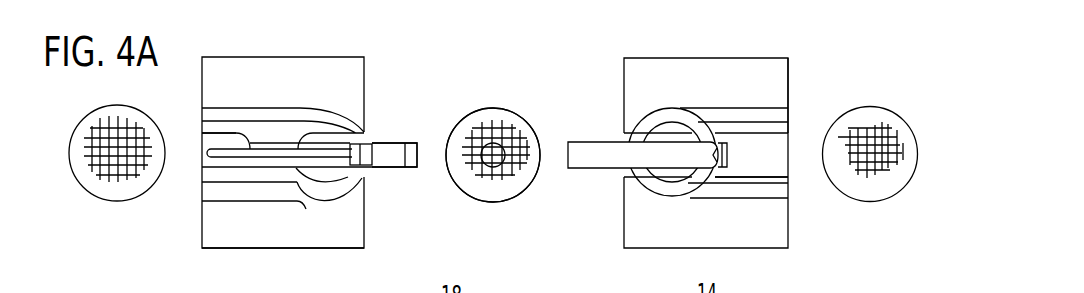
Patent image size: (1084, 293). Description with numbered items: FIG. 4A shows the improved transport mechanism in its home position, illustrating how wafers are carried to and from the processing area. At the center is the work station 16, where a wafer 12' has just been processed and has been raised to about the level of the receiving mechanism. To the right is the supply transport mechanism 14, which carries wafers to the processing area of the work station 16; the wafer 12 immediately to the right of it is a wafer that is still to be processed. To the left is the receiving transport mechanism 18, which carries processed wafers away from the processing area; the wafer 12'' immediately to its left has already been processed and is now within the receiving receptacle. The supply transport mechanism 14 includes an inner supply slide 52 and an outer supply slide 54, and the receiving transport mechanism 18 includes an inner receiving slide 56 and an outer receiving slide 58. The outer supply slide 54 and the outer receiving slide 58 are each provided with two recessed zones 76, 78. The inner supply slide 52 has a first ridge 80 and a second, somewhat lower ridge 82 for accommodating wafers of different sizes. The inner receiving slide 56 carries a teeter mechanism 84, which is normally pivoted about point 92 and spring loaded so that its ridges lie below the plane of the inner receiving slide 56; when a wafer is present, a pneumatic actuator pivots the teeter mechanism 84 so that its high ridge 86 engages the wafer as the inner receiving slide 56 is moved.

The wafer 12 is at (880, 146).
The wafer in processing area 12' is at (506, 145).
The processed wafer 12'' is at (124, 142).
The supply transport mechanism 14 is at (714, 47).
The work station 16 is at (506, 58).
The receiving transport mechanism 18 is at (304, 36).
The inner supply slide 52 is at (777, 160).
The outer supply slide 54 is at (789, 88).
The inner receiving slide 56 is at (385, 168).
The outer receiving slide 58 is at (270, 248).
The recessed zone 76 is at (328, 193).
The recessed zone 78 is at (308, 178).
The first ridge 80 is at (727, 158).
The second ridge 82 is at (707, 156).
The teeter mechanism 84 is at (202, 133).
The high ridge 86 is at (372, 157).
The pivot point 92 is at (330, 142).